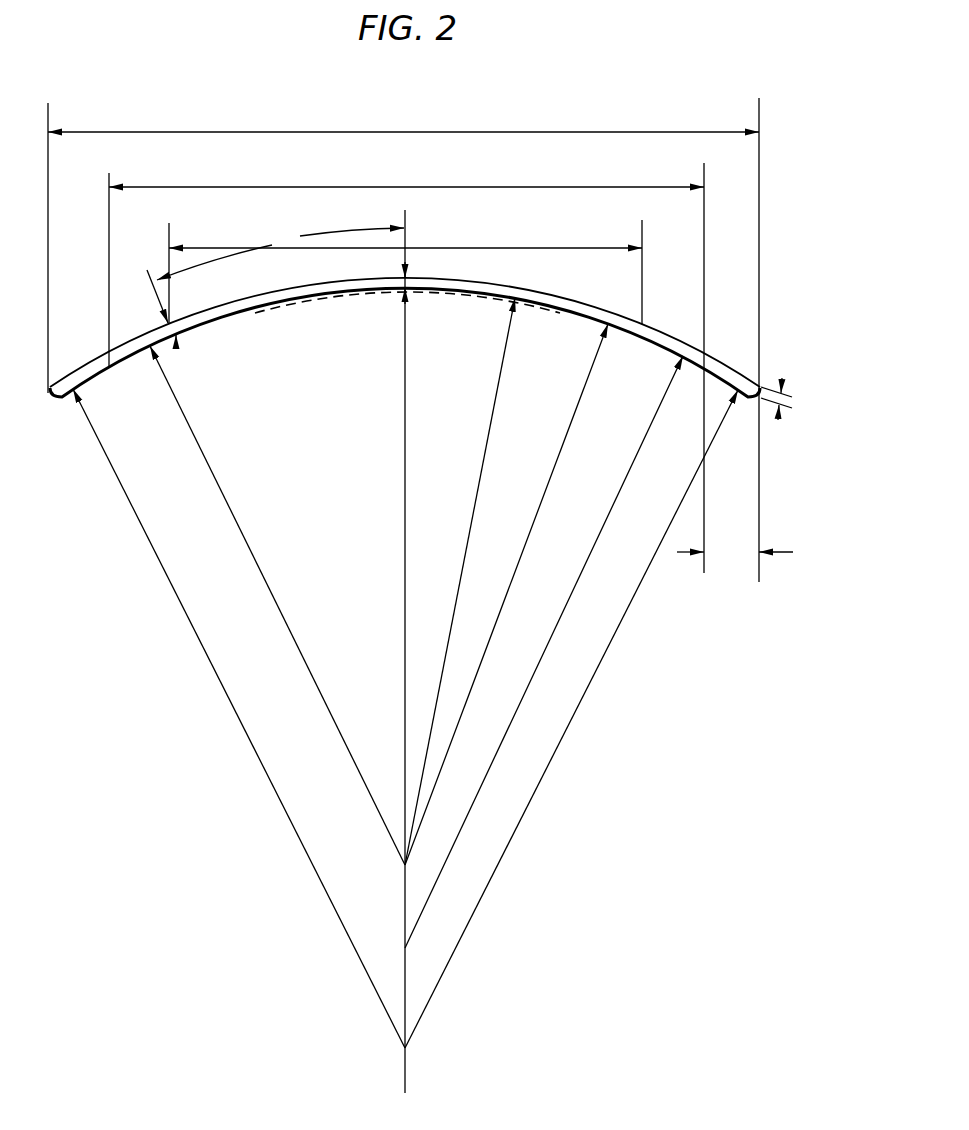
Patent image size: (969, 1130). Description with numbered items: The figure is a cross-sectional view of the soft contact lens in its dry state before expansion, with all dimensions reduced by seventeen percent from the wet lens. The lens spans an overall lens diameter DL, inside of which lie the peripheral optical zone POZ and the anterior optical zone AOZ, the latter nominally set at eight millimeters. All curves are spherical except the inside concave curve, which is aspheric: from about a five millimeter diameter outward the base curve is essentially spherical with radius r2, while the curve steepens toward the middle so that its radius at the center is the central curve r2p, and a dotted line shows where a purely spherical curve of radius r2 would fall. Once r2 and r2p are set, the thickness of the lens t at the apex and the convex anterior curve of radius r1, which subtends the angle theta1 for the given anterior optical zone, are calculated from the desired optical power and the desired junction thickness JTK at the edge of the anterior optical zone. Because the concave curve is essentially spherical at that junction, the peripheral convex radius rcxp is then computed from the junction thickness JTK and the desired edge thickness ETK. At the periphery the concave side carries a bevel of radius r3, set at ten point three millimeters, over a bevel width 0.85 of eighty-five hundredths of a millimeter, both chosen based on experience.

The overall lens diameter DL is at (361, 132).
The peripheral optical zone POZ is at (359, 187).
The anterior optical zone AOZ is at (425, 248).
The angle of r1 theta1 is at (275, 275).
The thickness of the lens t is at (400, 280).
The junction thickness at AOZ JTK is at (180, 336).
The edge thickness ETK is at (786, 406).
The bevel width 0.85 is at (735, 553).
The central curve r2p is at (407, 353).
The periphery base curve r2 is at (500, 372).
The radius of curvature of the anterior optical zone r1 is at (548, 488).
The peripheral convex radius of curvature rcxp is at (561, 615).
The bevel radius r3 is at (591, 680).